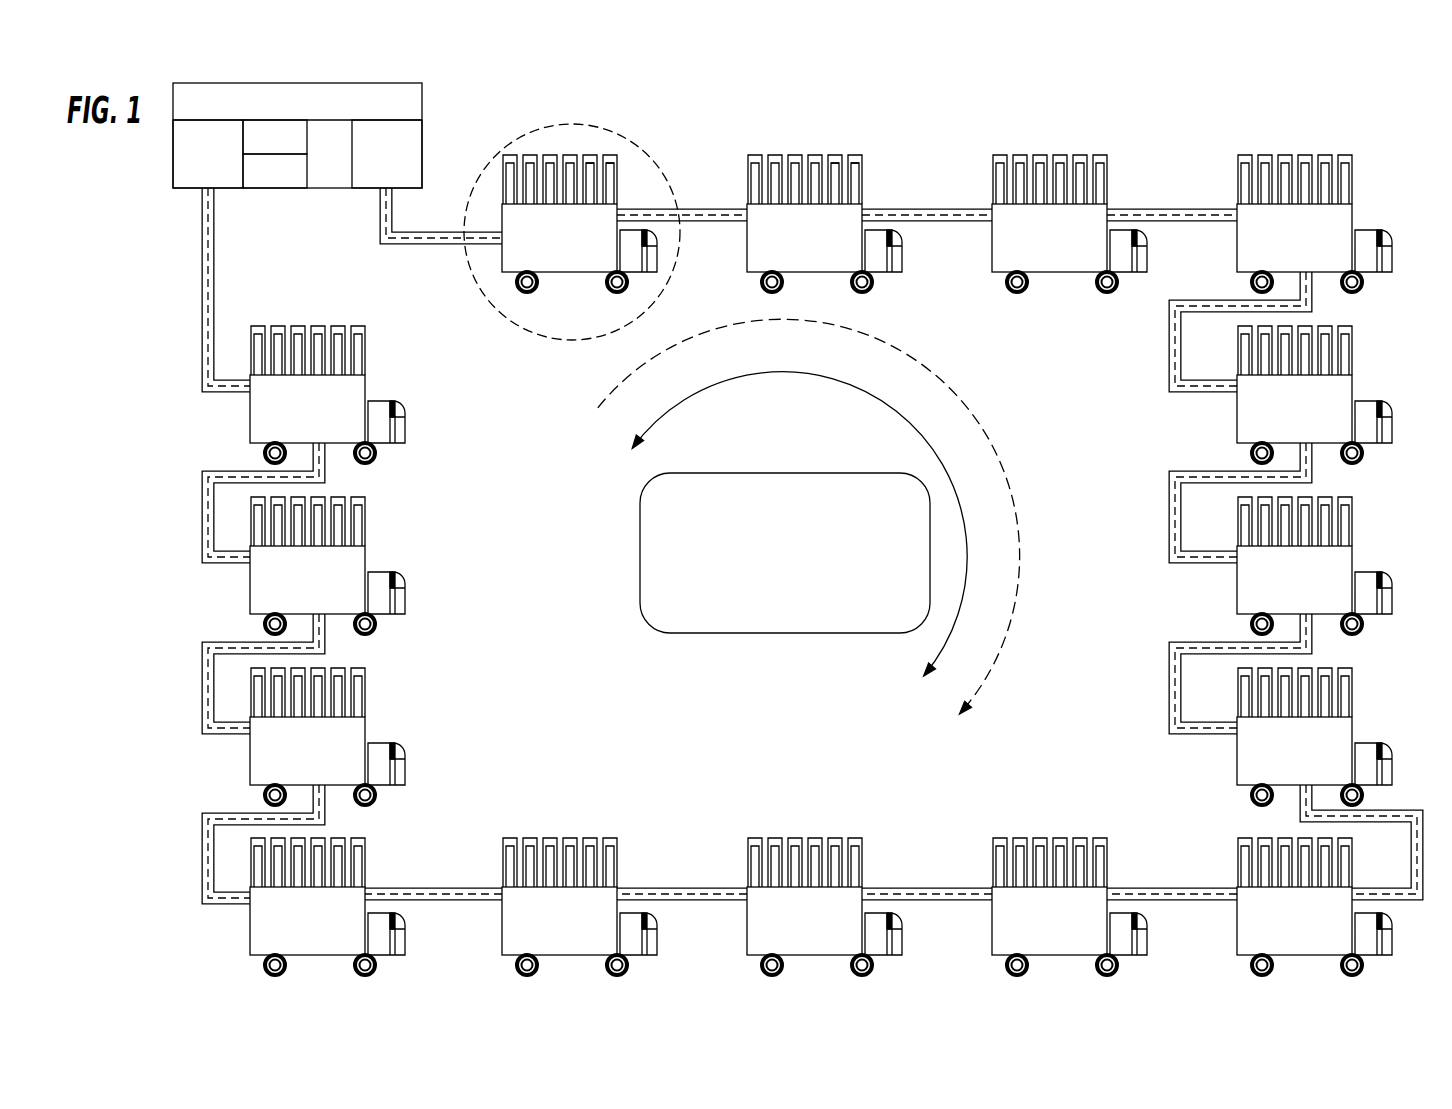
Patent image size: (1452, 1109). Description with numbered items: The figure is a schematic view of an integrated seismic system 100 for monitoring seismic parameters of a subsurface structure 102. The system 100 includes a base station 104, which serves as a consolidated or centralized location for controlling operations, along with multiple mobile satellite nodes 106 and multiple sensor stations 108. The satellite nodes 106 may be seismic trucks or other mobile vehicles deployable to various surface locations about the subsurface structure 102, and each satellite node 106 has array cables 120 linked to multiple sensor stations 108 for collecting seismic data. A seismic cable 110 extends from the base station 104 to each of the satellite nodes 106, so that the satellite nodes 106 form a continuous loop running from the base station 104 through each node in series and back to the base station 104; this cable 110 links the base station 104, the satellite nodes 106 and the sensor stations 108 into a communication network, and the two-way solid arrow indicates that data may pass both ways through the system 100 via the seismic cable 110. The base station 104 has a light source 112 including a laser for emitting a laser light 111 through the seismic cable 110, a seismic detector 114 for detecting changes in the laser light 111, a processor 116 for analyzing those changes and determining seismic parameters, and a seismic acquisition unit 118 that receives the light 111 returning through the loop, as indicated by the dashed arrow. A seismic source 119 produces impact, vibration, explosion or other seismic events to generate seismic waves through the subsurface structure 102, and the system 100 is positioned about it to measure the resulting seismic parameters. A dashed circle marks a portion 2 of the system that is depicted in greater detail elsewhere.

The portion 2 is at (502, 152).
The system 100 is at (1333, 122).
The subsurface structure 102 is at (1112, 592).
The base station 104 is at (274, 111).
The mobile satellite nodes 106 is at (578, 252).
The sensor stations 108 is at (608, 155).
The seismic cable 110 is at (410, 247).
The laser light 111 is at (380, 214).
The light source 112 is at (368, 164).
The seismic detector 114 is at (253, 148).
The processor 116 is at (253, 183).
The seismic acquisition unit 118 is at (191, 164).
The seismic source 119 is at (766, 571).
The array cables 120 is at (606, 170).